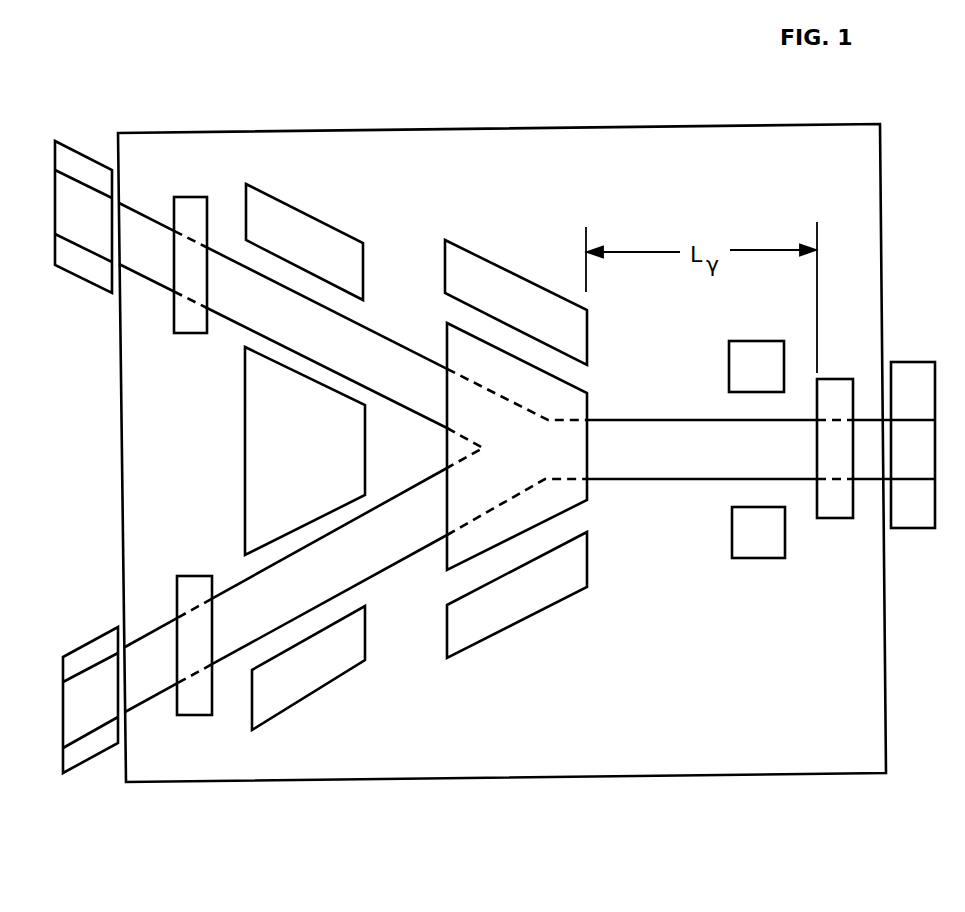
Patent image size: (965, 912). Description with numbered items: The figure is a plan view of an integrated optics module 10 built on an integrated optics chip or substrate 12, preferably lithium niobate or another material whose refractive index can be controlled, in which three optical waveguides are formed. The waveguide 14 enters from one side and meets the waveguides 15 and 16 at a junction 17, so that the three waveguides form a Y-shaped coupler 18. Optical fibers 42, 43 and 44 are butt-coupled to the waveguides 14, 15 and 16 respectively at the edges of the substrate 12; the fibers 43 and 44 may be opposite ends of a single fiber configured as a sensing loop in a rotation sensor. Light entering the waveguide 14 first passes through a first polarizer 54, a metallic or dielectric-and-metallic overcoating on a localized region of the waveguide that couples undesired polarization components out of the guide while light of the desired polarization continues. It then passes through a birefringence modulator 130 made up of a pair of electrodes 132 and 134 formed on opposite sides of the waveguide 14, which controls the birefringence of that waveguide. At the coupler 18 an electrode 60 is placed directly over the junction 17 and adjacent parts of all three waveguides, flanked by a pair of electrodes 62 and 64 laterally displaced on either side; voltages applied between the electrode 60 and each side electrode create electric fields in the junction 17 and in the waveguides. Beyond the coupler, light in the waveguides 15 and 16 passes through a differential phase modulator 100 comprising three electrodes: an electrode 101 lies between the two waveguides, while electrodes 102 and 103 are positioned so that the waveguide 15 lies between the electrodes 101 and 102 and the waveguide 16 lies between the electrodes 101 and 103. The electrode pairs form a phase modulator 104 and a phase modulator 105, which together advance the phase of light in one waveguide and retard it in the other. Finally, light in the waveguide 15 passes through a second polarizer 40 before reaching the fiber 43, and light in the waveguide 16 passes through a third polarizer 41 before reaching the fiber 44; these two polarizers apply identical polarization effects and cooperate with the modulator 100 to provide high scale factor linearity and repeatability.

The integrated optics module 10 is at (504, 91).
The substrate 12 is at (570, 125).
The optical waveguide 14 is at (720, 480).
The optical waveguide 15 is at (433, 545).
The optical waveguide 16 is at (380, 333).
The junction 17 is at (563, 406).
The Y-shaped coupler 18 is at (637, 567).
The second polarizer 40 is at (177, 712).
The third polarizer 41 is at (192, 197).
The optical fiber 42 is at (905, 528).
The optical fiber 43 is at (83, 642).
The optical fiber 44 is at (80, 152).
The first polarizer 54 is at (845, 518).
The electrode 60 is at (588, 493).
The electrode 62 is at (520, 622).
The electrode 64 is at (497, 266).
The differential phase modulator 100 is at (330, 206).
The electrode 101 is at (245, 465).
The electrode 102 is at (328, 685).
The electrode 103 is at (345, 233).
The phase modulator 104 is at (226, 561).
The phase modulator 105 is at (219, 349).
The birefringence modulator 130 is at (743, 651).
The electrode 132 is at (773, 560).
The electrode 134 is at (740, 341).